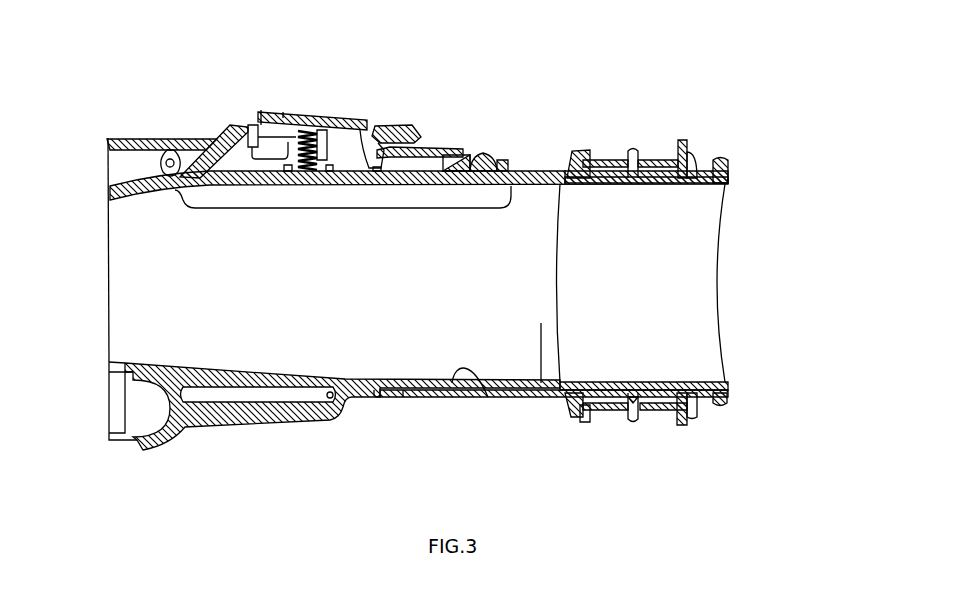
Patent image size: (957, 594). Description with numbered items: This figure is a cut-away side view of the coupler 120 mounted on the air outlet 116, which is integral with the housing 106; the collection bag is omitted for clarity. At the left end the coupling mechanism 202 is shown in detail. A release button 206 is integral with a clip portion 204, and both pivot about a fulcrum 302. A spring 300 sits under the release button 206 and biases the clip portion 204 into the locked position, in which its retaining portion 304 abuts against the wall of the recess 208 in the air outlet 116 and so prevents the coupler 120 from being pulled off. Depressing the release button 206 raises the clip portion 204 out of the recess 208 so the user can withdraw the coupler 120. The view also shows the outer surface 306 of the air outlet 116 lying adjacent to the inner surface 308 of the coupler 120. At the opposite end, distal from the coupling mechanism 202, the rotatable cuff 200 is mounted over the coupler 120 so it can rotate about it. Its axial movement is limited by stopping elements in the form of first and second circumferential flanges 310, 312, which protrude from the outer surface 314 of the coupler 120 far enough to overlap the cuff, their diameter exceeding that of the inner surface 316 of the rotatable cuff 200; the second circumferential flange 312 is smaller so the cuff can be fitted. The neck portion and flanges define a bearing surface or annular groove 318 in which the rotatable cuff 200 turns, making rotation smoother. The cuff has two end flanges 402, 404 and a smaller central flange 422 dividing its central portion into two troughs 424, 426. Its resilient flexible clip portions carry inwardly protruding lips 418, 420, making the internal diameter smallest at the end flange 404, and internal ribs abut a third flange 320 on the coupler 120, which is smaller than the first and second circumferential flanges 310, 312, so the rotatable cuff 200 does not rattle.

The housing 106 is at (143, 136).
The air outlet 116 is at (541, 397).
The coupler 120 is at (439, 397).
The rotatable cuff 200 is at (673, 160).
The coupling mechanism 202 is at (345, 108).
The clip portion 204 is at (483, 153).
The release button 206 is at (261, 110).
The recess 208 is at (520, 155).
The spring 300 is at (283, 112).
The fulcrum 302 is at (376, 124).
The retaining portion 304 is at (470, 154).
The outer surface of the air outlet 306 is at (405, 395).
The inner surface of the coupler 308 is at (492, 396).
The first circumferential flange 310 is at (575, 412).
The second circumferential flange 312 is at (692, 415).
The outer surface of the coupler 314 is at (613, 160).
The inner surface of the rotatable cuff 316 is at (679, 150).
The annular groove 318 is at (664, 190).
The third flange 320 is at (638, 400).
The end flange 402 is at (583, 415).
The end flange 404 is at (688, 424).
The lip 418 is at (693, 177).
The lip 420 is at (697, 393).
The central flange 422 is at (635, 422).
The trough 424 is at (605, 158).
The trough 426 is at (652, 160).